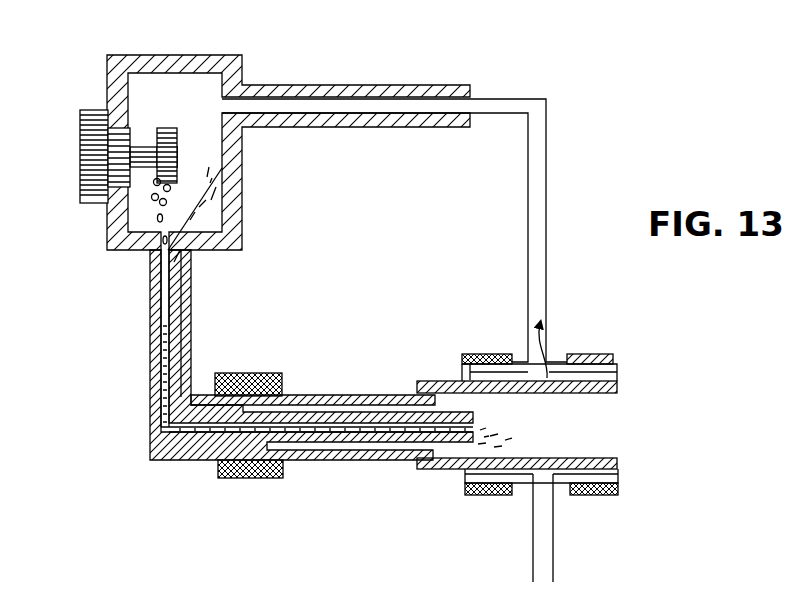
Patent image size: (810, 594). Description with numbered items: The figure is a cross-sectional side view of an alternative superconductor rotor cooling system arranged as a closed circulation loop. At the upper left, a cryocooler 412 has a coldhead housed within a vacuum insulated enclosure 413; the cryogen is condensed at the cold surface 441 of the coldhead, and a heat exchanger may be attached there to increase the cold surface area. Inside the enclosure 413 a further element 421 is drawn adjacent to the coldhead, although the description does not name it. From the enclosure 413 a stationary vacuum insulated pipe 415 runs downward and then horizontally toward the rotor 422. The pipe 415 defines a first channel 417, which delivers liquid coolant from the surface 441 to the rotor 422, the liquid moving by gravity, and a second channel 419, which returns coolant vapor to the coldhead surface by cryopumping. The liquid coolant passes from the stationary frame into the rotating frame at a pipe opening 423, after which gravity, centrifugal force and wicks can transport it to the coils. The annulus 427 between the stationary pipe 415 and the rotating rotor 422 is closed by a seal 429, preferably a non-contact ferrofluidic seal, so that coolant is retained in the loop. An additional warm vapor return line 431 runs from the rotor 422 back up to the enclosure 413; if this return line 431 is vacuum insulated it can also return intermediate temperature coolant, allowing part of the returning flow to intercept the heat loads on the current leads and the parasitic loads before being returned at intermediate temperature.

The cryocooler 412 is at (82, 158).
The vacuum insulated enclosure 413 is at (243, 70).
The vacuum insulated pipe 415 is at (188, 312).
The first channel 417 is at (150, 425).
The second channel 419 is at (183, 368).
The piston 421 is at (167, 127).
The rotor 422 is at (615, 372).
The pipe opening 423 is at (482, 412).
The annulus 427 is at (252, 480).
The seal 429 is at (230, 482).
The warm vapor return line 431 is at (548, 190).
The surface 441 is at (183, 147).